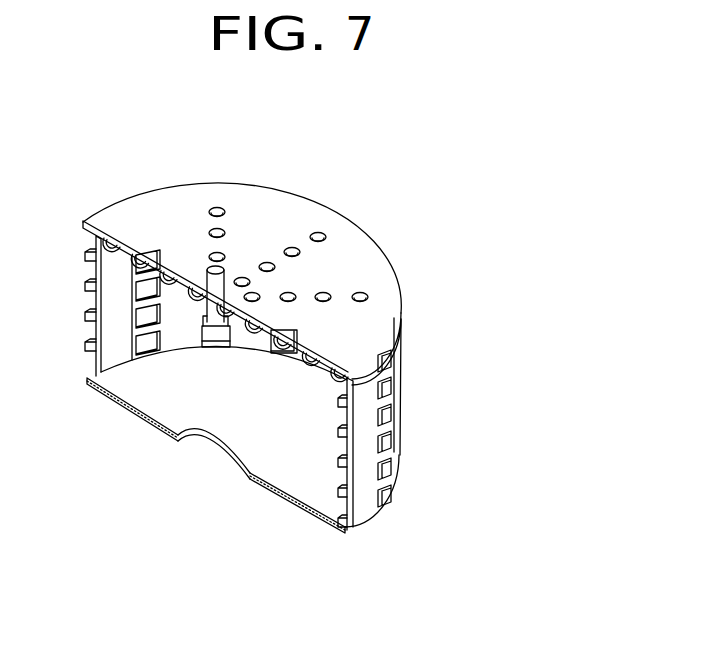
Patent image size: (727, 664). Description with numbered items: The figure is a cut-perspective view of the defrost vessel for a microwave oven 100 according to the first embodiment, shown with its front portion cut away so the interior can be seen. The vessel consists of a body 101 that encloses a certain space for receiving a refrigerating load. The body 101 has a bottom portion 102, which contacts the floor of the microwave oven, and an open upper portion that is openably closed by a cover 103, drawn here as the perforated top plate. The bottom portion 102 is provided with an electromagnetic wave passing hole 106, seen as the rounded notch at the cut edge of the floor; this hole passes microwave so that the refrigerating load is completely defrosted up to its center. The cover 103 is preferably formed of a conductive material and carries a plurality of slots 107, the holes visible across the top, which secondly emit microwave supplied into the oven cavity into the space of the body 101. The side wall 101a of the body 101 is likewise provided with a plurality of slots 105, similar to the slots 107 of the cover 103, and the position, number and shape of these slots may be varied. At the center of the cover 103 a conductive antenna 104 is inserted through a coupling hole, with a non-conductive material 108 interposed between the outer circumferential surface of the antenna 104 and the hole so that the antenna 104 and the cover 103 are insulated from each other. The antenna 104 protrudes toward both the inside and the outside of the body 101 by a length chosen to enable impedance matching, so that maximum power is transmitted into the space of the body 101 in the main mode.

The defrost vessel for a microwave oven 100 is at (439, 248).
The body 101 is at (404, 356).
The side wall 101a is at (393, 397).
The bottom portion 102 is at (299, 474).
The cover 103 is at (343, 203).
The antenna 104 is at (211, 266).
The slots 105 is at (390, 447).
The electromagnetic wave passing hole 106 is at (236, 436).
The slots 107 is at (291, 248).
The non-conductive material 108 is at (225, 302).